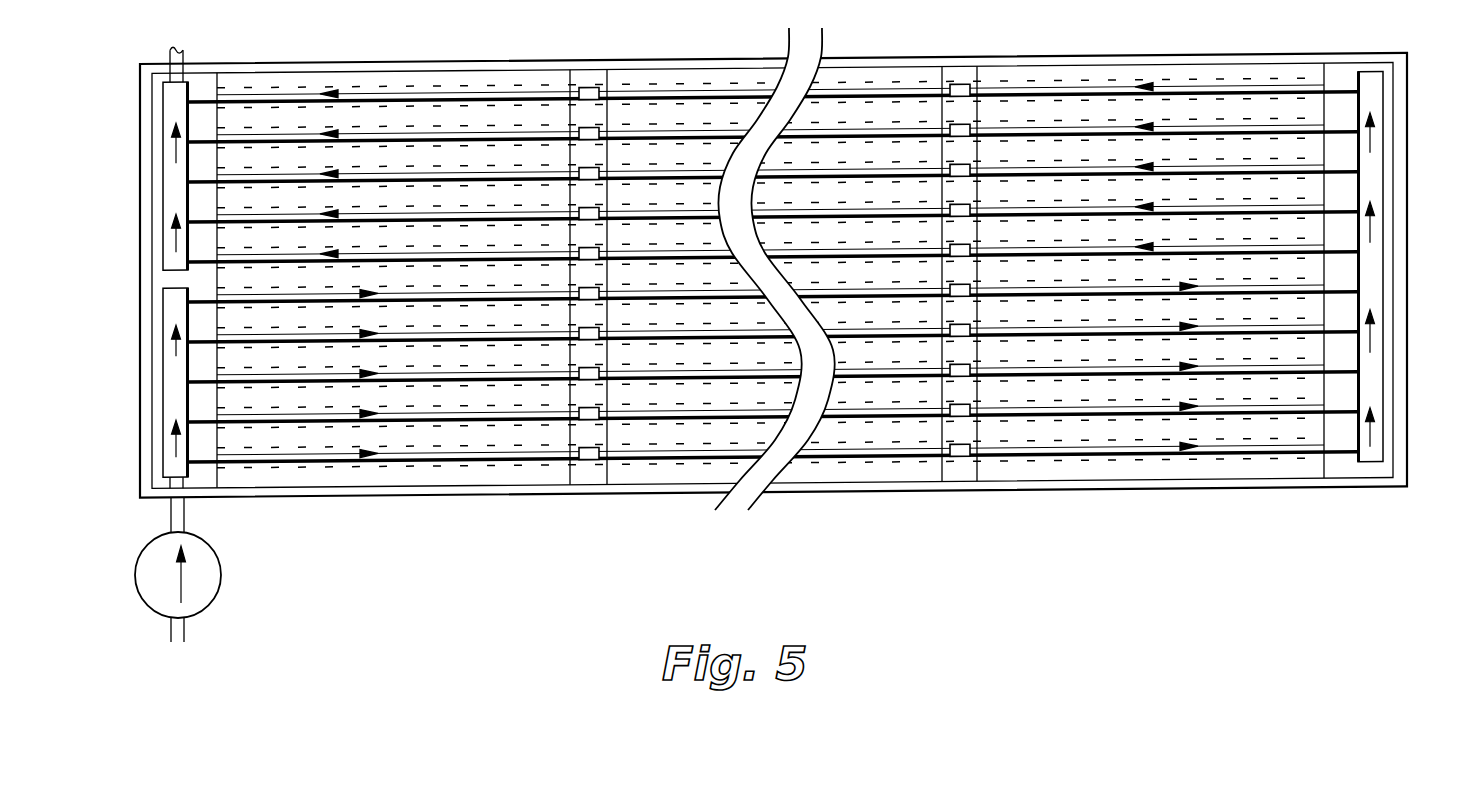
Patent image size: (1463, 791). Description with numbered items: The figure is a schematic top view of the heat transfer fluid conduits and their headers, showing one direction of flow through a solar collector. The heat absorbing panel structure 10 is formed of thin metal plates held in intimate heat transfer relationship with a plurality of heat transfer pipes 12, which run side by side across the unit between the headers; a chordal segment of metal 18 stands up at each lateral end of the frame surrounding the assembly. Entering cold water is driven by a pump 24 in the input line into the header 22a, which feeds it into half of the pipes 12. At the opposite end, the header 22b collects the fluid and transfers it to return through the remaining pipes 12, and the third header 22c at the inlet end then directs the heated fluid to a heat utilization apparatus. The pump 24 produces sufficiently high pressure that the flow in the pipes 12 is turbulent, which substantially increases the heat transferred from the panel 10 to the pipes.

The heat absorbing panel 10 is at (290, 113).
The heat transfer pipe 12 is at (238, 93).
The chordal segment of metal 18 is at (141, 434).
The header 22a is at (177, 463).
The header 22b is at (1369, 293).
The third header 22c is at (175, 97).
The pump 24 is at (222, 575).